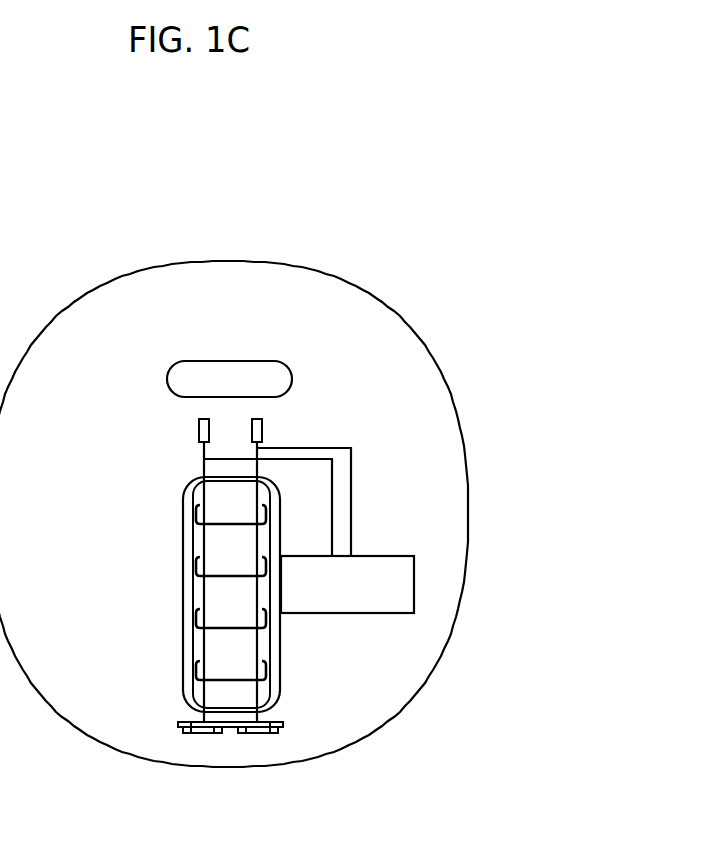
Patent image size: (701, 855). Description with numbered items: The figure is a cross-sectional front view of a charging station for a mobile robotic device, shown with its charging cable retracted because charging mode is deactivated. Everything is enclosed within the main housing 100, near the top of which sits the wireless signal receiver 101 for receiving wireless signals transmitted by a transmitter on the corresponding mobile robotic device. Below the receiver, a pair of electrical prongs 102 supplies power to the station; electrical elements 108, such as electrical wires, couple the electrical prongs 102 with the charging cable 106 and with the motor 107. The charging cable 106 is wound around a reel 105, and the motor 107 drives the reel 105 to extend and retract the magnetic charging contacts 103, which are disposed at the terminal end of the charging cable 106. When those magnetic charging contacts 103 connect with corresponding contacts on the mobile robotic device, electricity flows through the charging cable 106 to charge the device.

The main housing 100 is at (400, 312).
The wireless signal receiver 101 is at (263, 362).
The electrical prongs 102 is at (200, 432).
The magnetic charging contacts 103 is at (203, 733).
The reel 105 is at (182, 575).
The charging cable 106 is at (217, 648).
The motor 107 is at (414, 597).
The electrical elements 108 is at (350, 492).